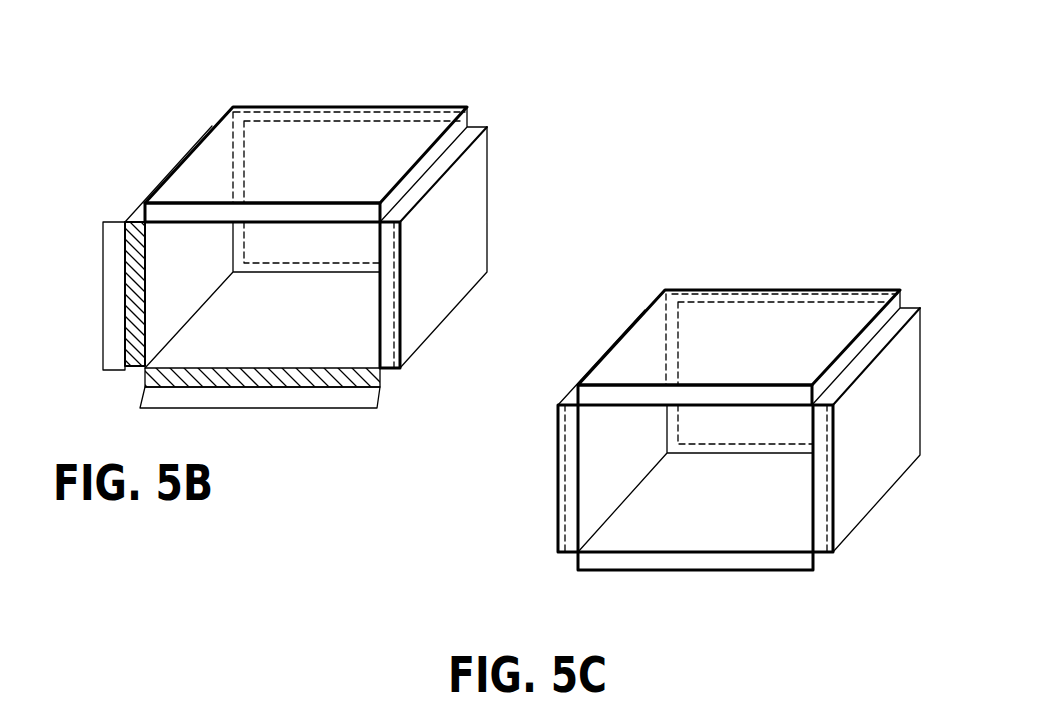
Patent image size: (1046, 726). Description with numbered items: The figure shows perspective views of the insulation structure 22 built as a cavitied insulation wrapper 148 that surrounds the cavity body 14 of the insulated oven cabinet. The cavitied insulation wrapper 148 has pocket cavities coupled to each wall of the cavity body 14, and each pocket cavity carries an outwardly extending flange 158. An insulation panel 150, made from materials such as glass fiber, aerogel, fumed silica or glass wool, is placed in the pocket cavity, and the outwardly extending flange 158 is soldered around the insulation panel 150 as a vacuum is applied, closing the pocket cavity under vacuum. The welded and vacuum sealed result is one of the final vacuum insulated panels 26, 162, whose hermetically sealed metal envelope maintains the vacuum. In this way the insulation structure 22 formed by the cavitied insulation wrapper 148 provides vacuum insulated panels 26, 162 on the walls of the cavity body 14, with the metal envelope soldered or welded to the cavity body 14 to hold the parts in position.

In FIG. 5B, the cavity body 14 is at (303, 340).
In FIG. 5C, the cavity body 14 is at (773, 520).
In FIG. 5C, the insulation structure 22 is at (808, 237).
In FIG. 5C, the vacuum insulated panel 26 is at (710, 318).
In FIG. 5C, the cavitied insulation wrapper 148 is at (723, 394).
In FIG. 5B, the insulation panel 150 is at (303, 213).
In FIG. 5C, the insulation panel 150 is at (710, 387).
In FIG. 5B, the outwardly extending flange 158 is at (115, 248).
In FIG. 5B, the vacuum insulated panel 162 is at (175, 213).
In FIG. 5C, the vacuum insulated panel 162 is at (628, 398).